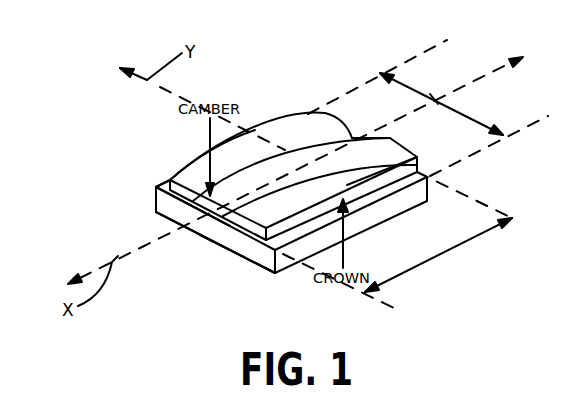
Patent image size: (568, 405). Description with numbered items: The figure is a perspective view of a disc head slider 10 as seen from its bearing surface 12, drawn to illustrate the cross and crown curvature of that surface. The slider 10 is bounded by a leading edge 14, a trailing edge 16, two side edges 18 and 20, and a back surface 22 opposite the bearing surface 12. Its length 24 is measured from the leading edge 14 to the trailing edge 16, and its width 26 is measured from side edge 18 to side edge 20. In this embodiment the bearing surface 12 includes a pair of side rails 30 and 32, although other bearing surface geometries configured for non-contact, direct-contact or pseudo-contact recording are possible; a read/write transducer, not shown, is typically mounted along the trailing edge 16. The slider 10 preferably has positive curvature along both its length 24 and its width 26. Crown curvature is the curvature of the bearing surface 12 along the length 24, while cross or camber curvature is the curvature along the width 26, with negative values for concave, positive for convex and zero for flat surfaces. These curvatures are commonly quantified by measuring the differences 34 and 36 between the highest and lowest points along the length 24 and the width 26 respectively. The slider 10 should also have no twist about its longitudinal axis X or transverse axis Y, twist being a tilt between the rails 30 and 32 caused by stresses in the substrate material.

The disc head slider 10 is at (112, 124).
The bearing surface 12 is at (286, 122).
The leading edge 14 is at (343, 162).
The trailing edge 16 is at (170, 213).
The side edge 18 is at (283, 256).
The side edge 20 is at (160, 186).
The back surface 22 is at (257, 265).
The length 24 is at (443, 255).
The width 26 is at (412, 87).
The side rail 30 is at (198, 162).
The side rail 32 is at (283, 200).
The difference 34 is at (436, 227).
The difference 36 is at (210, 222).